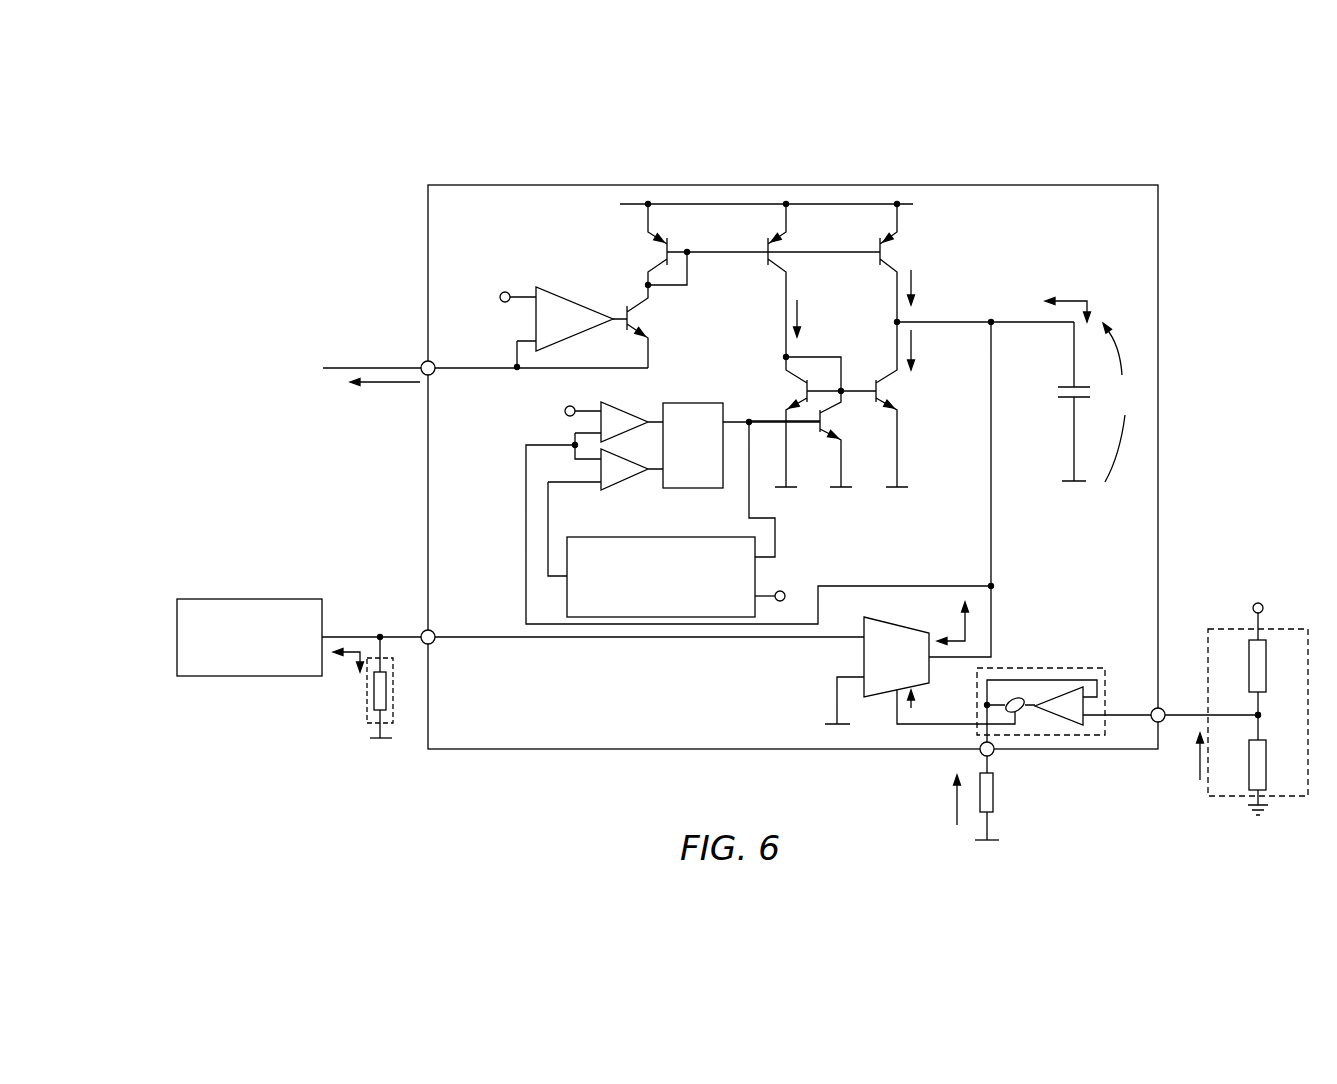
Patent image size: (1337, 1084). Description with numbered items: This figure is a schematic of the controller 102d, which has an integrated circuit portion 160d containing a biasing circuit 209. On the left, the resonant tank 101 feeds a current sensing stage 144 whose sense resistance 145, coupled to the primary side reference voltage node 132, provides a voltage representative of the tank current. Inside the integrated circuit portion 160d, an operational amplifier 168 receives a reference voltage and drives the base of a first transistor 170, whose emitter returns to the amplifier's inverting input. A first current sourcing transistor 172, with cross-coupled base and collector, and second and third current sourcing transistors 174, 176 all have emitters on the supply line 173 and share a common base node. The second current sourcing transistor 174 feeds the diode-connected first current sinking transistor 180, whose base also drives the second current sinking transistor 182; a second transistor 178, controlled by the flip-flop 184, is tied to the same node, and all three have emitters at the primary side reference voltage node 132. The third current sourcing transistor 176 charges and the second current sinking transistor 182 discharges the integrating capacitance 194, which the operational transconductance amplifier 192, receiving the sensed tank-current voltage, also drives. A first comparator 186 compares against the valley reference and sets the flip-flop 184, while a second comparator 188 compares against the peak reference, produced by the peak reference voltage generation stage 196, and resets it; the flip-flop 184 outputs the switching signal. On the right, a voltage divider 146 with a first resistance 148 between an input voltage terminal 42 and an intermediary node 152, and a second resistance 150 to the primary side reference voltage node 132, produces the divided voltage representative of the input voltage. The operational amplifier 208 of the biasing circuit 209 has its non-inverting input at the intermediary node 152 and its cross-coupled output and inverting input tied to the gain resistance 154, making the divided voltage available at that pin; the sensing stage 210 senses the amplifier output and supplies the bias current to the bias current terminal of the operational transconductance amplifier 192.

The controller 102d is at (1043, 158).
The integrated circuit portion 160d is at (703, 186).
The supply line 173 is at (912, 206).
The operational amplifier 168 is at (552, 288).
The first transistor 170 is at (625, 328).
The first current sourcing transistor 172 is at (659, 246).
The second current sourcing transistor 174 is at (770, 264).
The third current sourcing transistor 176 is at (874, 248).
The second transistor 178 is at (820, 434).
The first current sinking transistor 180 is at (808, 386).
The second current sinking transistor 182 is at (874, 385).
The flip-flop 184 is at (693, 403).
The first comparator 186 is at (624, 404).
The second comparator 188 is at (624, 488).
The operational transconductance amplifier 192 is at (863, 628).
The integrating capacitance 194 is at (1088, 400).
The peak reference voltage generation stage 196 is at (662, 537).
The primary side reference voltage node 132 is at (890, 490).
The resonant tank 101 is at (250, 599).
The current sensing stage 144 is at (369, 703).
The sense resistance 145 is at (388, 692).
The voltage divider 146 is at (1236, 687).
The input voltage terminal 42 is at (1265, 610).
The first resistance 148 is at (1249, 668).
The second resistance 150 is at (1249, 760).
The intermediary node 152 is at (1259, 715).
The gain resistance 154 is at (994, 806).
The operational amplifier 208 is at (1066, 698).
The biasing circuit 209 is at (1067, 682).
The sensing stage 210 is at (1018, 698).